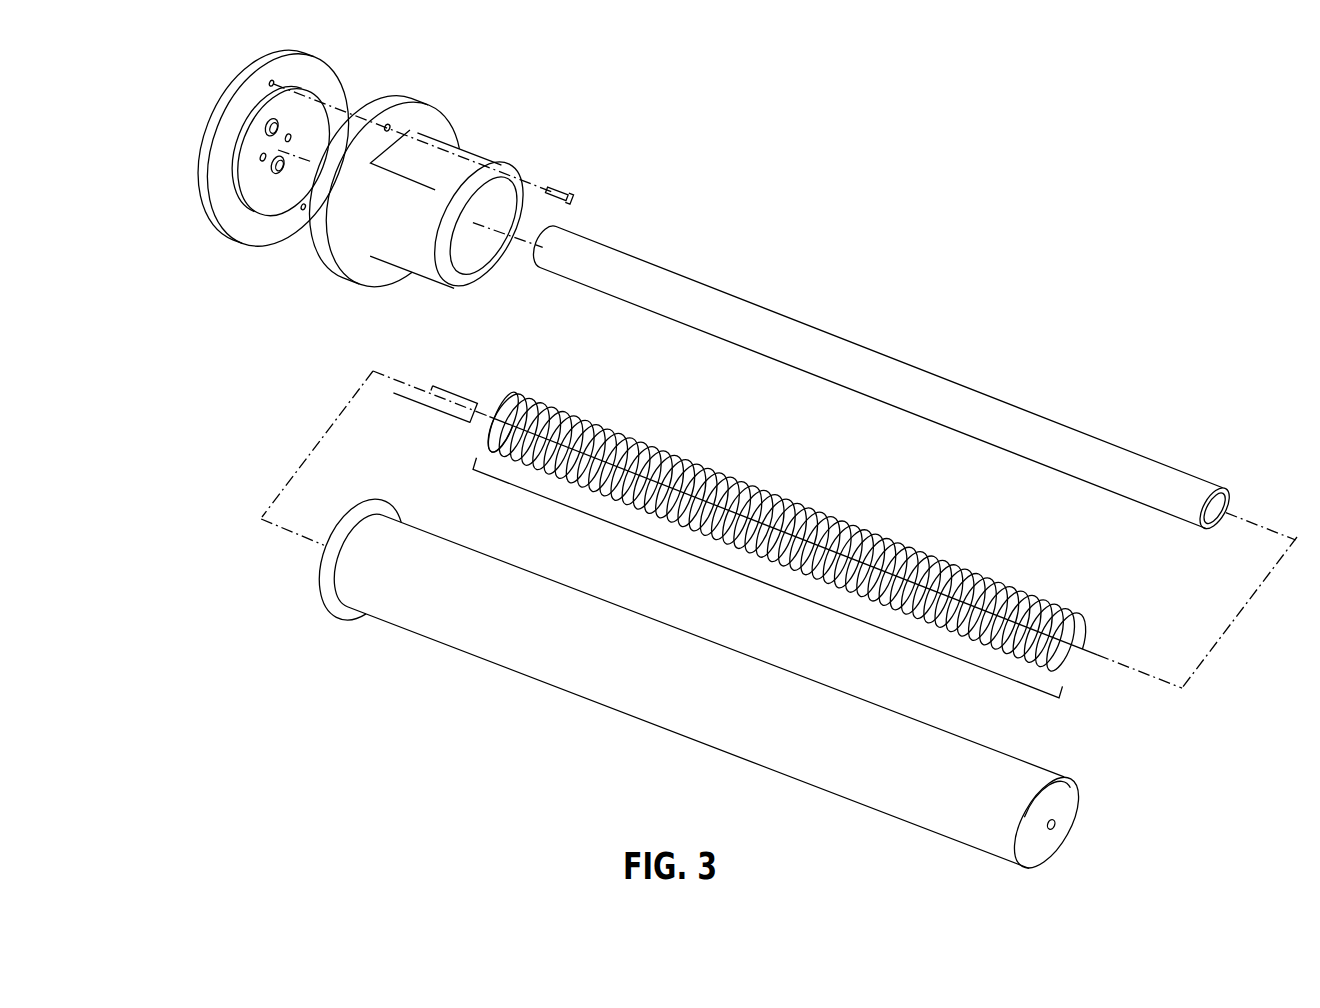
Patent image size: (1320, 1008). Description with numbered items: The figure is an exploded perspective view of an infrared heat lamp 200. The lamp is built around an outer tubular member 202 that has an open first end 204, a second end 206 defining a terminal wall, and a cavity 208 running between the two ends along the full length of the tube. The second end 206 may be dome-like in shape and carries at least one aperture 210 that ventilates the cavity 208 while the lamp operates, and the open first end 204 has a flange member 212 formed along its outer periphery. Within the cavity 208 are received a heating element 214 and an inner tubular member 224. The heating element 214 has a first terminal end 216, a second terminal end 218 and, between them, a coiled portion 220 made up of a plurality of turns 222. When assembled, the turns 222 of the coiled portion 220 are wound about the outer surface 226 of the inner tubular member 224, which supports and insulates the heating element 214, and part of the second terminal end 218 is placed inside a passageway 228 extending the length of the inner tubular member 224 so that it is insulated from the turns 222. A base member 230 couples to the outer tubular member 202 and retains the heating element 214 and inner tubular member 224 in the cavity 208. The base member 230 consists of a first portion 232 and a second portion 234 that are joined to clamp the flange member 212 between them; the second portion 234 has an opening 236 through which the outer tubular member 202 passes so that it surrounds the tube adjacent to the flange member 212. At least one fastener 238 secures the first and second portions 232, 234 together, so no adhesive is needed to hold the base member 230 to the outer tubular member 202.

The infrared heat lamp 200 is at (1047, 177).
The outer tubular member 202 is at (588, 741).
The open first end 204 is at (383, 527).
The second end 206 is at (1060, 790).
The cavity 208 is at (522, 638).
The aperture 210 is at (1064, 827).
The flange member 212 is at (320, 578).
The heating element 214 is at (798, 470).
The first terminal end 216 is at (407, 392).
The second terminal end 218 is at (452, 389).
The coiled portion 220 is at (798, 522).
The turns 222 is at (927, 550).
The inner tubular member 224 is at (906, 336).
The outer surface 226 is at (799, 321).
The passageway 228 is at (1228, 497).
The base member 230 is at (270, 298).
The first portion 232 is at (184, 179).
The second portion 234 is at (460, 102).
The opening 236 is at (491, 258).
The fastener 238 is at (579, 196).